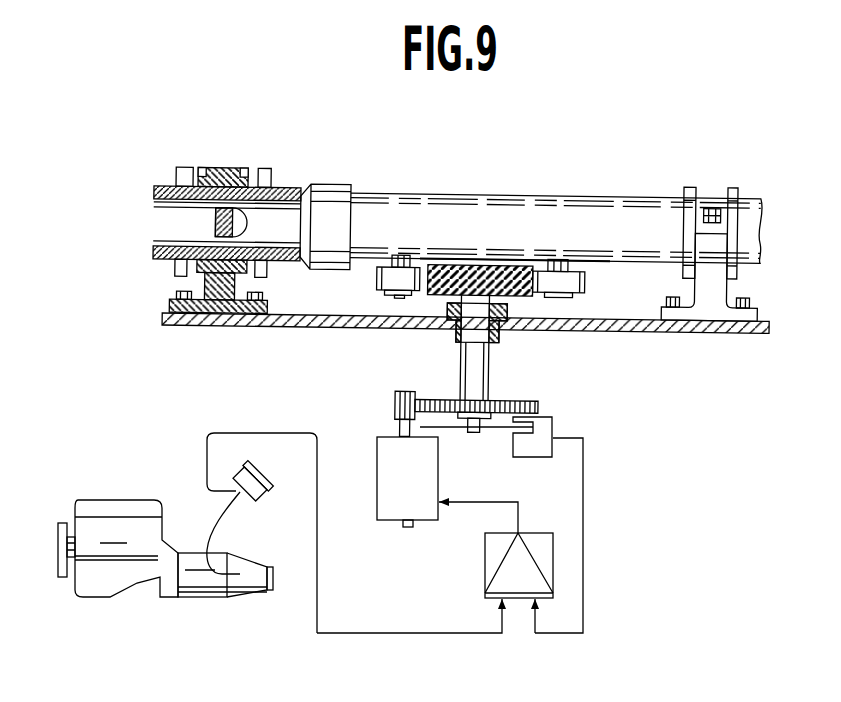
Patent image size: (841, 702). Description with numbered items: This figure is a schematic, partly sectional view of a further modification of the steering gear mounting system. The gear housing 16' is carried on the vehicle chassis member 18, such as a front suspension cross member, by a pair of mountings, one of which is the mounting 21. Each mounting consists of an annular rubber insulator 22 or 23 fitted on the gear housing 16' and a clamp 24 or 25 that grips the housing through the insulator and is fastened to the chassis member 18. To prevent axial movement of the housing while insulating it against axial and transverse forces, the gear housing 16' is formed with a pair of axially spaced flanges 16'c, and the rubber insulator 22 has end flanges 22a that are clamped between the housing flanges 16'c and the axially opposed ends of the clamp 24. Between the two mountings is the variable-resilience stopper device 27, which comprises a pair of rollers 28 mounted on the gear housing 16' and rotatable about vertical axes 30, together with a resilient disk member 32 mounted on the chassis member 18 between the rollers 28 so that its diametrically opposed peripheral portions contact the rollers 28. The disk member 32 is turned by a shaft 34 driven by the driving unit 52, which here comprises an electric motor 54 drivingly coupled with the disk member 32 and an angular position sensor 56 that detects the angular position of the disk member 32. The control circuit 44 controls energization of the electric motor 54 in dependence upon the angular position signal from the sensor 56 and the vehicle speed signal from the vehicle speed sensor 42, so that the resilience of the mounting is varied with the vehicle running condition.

The gear housing 16' is at (458, 191).
The flanges 16'c is at (223, 199).
The annular rubber insulator 22 is at (243, 169).
The flanges 22a is at (200, 171).
The clamp 24 is at (223, 311).
The vehicle chassis member 18 is at (638, 330).
The annular rubber insulator 23 is at (692, 183).
The mounting 21 is at (723, 182).
The clamp 25 is at (710, 318).
The variable-resilience stopper device 27 is at (494, 253).
The vertical axes 30 is at (402, 256).
The rollers 28 is at (378, 282).
The resilient disk member 32 is at (470, 264).
The drive shaft 34 is at (487, 371).
The electric motor 54 is at (390, 518).
The angular position sensor 56 is at (545, 457).
The control circuit 44 is at (487, 574).
The driving unit 52 is at (593, 472).
The vehicle speed sensor 42 is at (256, 503).